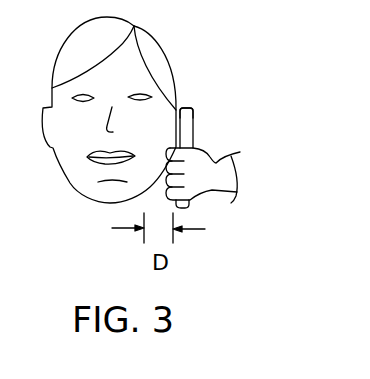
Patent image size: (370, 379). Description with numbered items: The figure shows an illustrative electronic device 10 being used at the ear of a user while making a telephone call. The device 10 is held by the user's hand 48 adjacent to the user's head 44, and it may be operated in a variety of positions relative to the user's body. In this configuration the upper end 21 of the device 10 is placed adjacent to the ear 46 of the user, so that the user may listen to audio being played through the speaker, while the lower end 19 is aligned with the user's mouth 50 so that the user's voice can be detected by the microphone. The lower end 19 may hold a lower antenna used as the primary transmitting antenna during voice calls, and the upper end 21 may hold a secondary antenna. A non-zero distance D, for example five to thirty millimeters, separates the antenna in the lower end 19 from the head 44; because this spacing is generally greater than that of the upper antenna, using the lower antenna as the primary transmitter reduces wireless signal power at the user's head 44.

The head 44 is at (153, 33).
The ear 46 is at (176, 108).
The upper end 21 is at (193, 118).
The electronic device 10 is at (193, 138).
The user's hand 48 is at (240, 152).
The lower end 19 is at (189, 199).
The mouth 50 is at (89, 157).